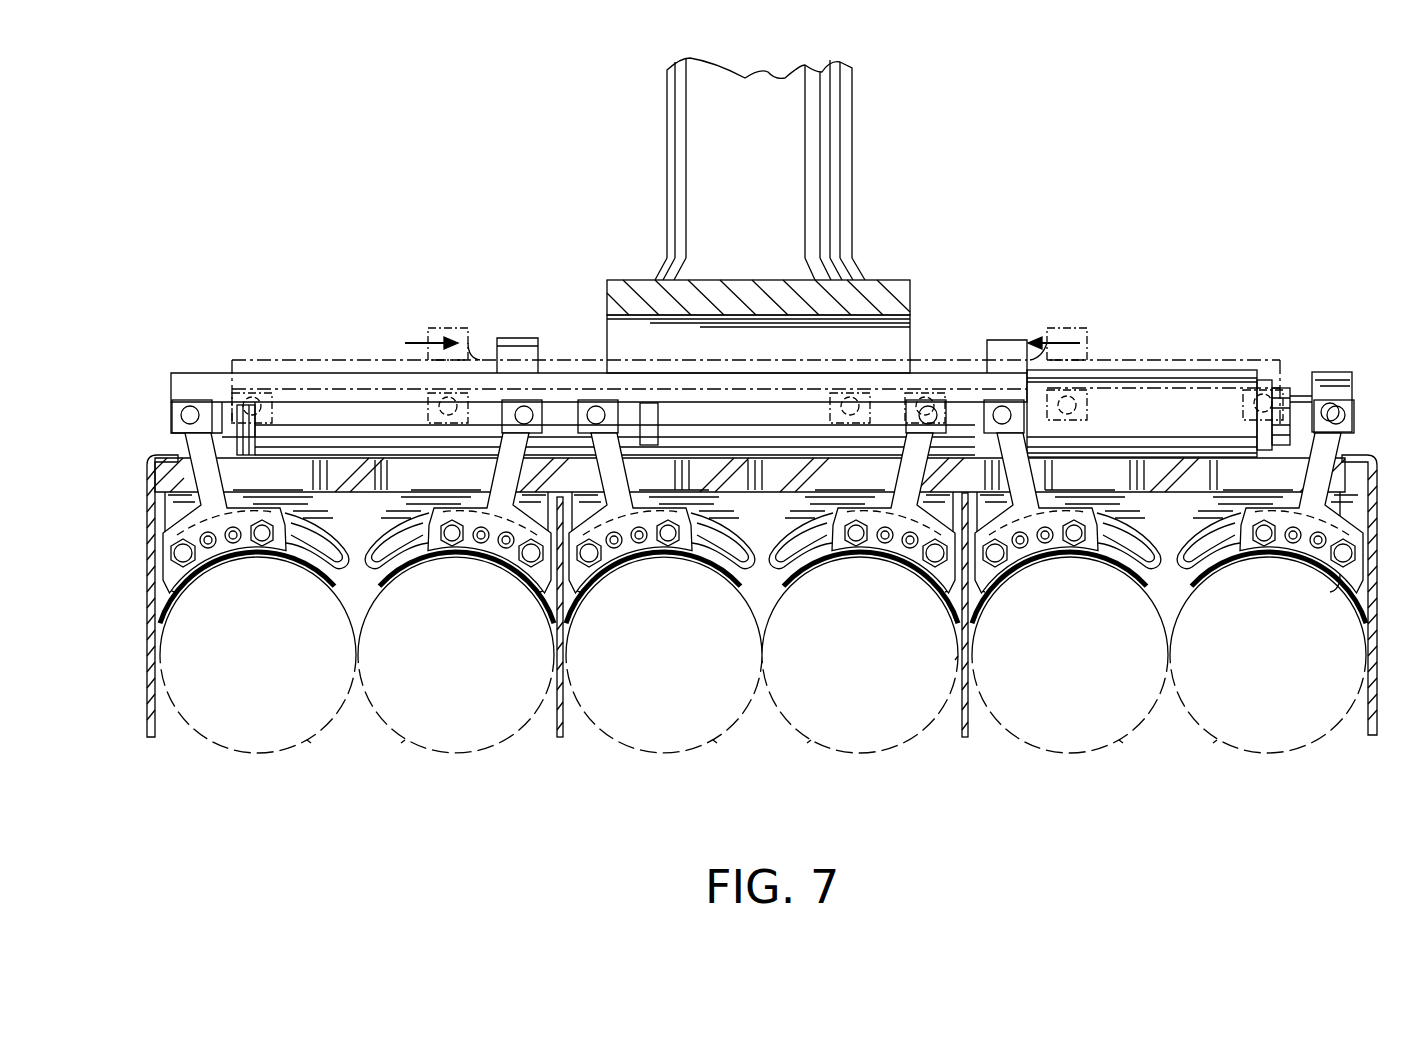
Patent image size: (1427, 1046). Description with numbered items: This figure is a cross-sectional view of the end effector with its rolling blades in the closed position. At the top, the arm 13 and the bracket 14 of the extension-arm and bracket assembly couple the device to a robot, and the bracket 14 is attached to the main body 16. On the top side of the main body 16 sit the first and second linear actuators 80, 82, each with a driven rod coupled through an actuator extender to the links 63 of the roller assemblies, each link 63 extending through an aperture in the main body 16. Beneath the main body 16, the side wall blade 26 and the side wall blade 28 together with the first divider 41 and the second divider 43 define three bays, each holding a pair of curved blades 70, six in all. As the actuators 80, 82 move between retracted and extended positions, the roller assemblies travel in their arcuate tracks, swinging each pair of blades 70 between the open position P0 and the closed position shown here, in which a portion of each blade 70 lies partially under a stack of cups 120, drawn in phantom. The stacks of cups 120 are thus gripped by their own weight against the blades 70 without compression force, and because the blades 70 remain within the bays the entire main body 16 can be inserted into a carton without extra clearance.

The arm 13 is at (778, 166).
The bracket 14 is at (892, 282).
The main body 16 is at (1358, 452).
The blade 26 is at (1377, 705).
The blade 28 is at (147, 705).
The first divider 41 is at (963, 740).
The second divider 43 is at (557, 740).
The link 63 is at (212, 471).
The curved blade 70 is at (193, 585).
The first linear actuator 80 is at (330, 420).
The second linear actuator 82 is at (1177, 402).
The cup 120 is at (405, 742).
The open position P0 is at (955, 660).